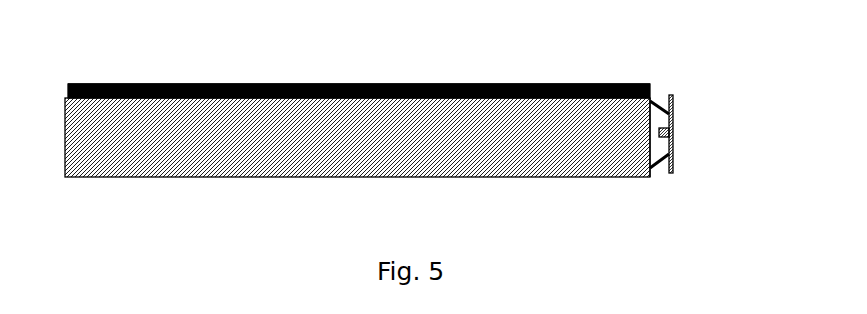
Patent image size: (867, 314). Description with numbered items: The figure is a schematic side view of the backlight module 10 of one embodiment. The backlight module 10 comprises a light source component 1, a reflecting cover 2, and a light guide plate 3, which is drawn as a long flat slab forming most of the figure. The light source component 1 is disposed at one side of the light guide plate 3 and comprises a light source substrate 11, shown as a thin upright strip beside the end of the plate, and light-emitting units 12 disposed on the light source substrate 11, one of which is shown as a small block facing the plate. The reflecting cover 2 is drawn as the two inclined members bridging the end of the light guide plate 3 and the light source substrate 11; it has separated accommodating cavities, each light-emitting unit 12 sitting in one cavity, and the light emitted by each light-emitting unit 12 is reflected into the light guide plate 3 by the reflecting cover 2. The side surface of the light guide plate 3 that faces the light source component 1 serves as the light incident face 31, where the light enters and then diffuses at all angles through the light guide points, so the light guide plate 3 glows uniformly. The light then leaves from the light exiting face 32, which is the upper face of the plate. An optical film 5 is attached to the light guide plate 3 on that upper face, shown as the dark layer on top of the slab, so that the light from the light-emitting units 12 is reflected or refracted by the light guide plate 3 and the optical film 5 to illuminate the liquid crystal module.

The backlight module 10 is at (87, 65).
The light guide plate 3 is at (433, 145).
The optical film 5 is at (350, 95).
The light exiting face 32 is at (220, 97).
The light incident face 31 is at (650, 128).
The reflecting cover 2 is at (674, 101).
The light source component 1 is at (708, 134).
The light source substrate 11 is at (674, 153).
The light-emitting units 12 is at (669, 131).